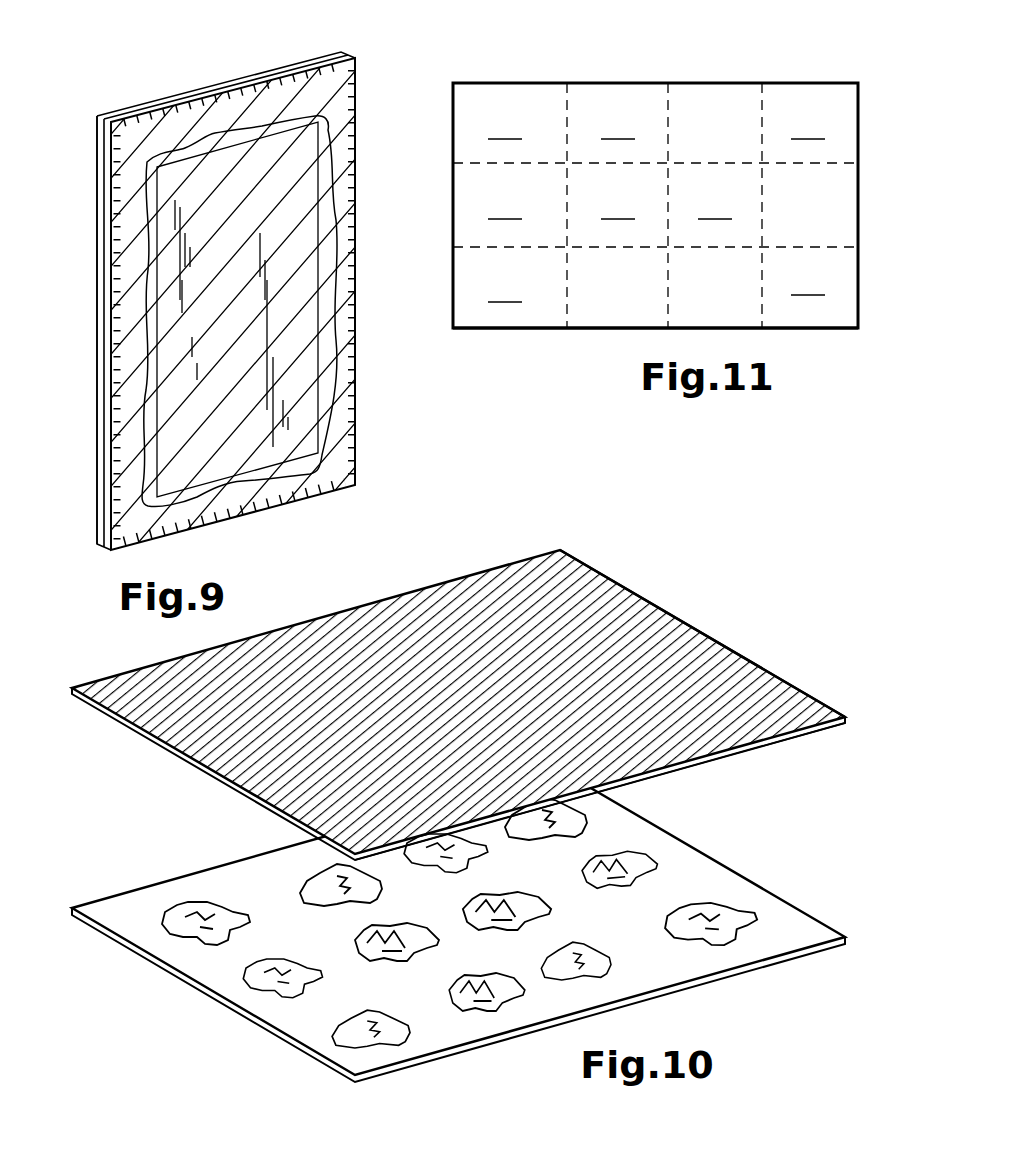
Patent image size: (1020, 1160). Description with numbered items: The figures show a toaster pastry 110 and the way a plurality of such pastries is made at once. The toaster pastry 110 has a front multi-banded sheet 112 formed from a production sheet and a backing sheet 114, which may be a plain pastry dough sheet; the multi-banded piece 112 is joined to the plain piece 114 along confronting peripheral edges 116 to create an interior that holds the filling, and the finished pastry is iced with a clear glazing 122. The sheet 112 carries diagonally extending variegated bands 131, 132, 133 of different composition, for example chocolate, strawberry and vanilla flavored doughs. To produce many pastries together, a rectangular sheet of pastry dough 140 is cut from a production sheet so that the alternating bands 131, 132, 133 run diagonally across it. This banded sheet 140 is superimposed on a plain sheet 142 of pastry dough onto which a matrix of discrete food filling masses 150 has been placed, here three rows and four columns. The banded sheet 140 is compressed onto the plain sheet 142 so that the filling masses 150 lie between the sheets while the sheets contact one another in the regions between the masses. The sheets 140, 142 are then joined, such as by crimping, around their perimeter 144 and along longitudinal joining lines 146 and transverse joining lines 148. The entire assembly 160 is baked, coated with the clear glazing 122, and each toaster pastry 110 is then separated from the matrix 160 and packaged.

In FIG. 9, the toaster pastry 110 is at (385, 46).
In FIG. 11, the toaster pastry 110 is at (656, 209).
In FIG. 9, the front multi-banded sheet 112 is at (342, 453).
In FIG. 9, the backing sheet 114 is at (97, 117).
In FIG. 9, the confronting peripheral edges 116 is at (355, 327).
In FIG. 9, the clear glazing 122 is at (242, 97).
In FIG. 9, the variegated band 131 is at (328, 97).
In FIG. 10, the variegated band 131 is at (542, 555).
In FIG. 9, the variegated band 132 is at (357, 125).
In FIG. 10, the variegated band 132 is at (563, 552).
In FIG. 9, the variegated band 133 is at (343, 188).
In FIG. 10, the variegated band 133 is at (572, 560).
In FIG. 10, the rectangular sheet of pastry dough 140 is at (508, 524).
In FIG. 10, the plain sheet of pastry dough 142 is at (682, 1001).
In FIG. 10, the food filling masses 150 is at (640, 862).
In FIG. 11, the assembly 160 is at (710, 66).
In FIG. 11, the perimeter 144 is at (512, 330).
In FIG. 11, the longitudinal joining lines 146 is at (657, 248).
In FIG. 11, the transverse joining lines 148 is at (568, 103).